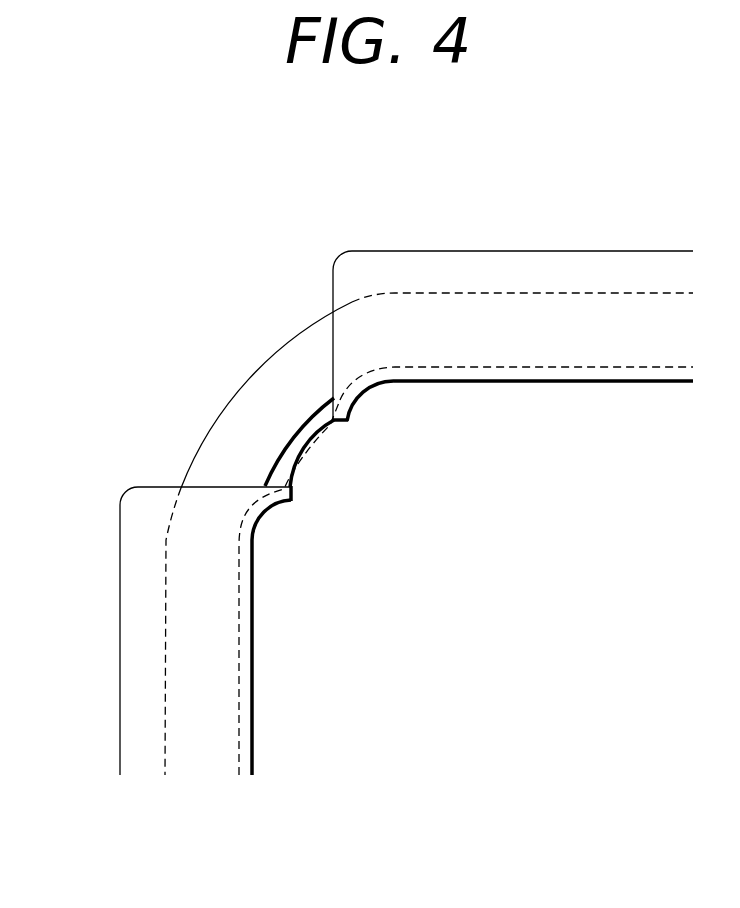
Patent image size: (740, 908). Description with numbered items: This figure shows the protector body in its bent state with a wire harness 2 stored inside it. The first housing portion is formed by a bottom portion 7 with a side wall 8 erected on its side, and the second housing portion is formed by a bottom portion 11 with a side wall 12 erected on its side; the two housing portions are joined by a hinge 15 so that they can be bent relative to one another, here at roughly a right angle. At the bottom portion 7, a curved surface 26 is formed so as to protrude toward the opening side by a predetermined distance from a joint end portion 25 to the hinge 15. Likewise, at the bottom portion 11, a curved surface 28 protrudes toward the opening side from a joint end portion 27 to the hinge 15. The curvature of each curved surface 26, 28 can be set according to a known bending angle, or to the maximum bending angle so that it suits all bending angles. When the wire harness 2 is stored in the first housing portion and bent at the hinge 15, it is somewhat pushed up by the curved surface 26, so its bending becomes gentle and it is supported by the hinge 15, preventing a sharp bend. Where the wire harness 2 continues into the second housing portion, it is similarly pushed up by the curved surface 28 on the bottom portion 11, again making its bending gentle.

The wire harness 2 is at (248, 402).
The bottom portion 7 is at (539, 362).
The side wall 8 is at (522, 268).
The bottom portion 11 is at (230, 707).
The side wall 12 is at (130, 596).
The hinge 15 is at (306, 447).
The joint end portion 25 is at (343, 423).
The curved surface 26 is at (370, 410).
The joint end portion 27 is at (292, 497).
The curved surface 28 is at (277, 521).